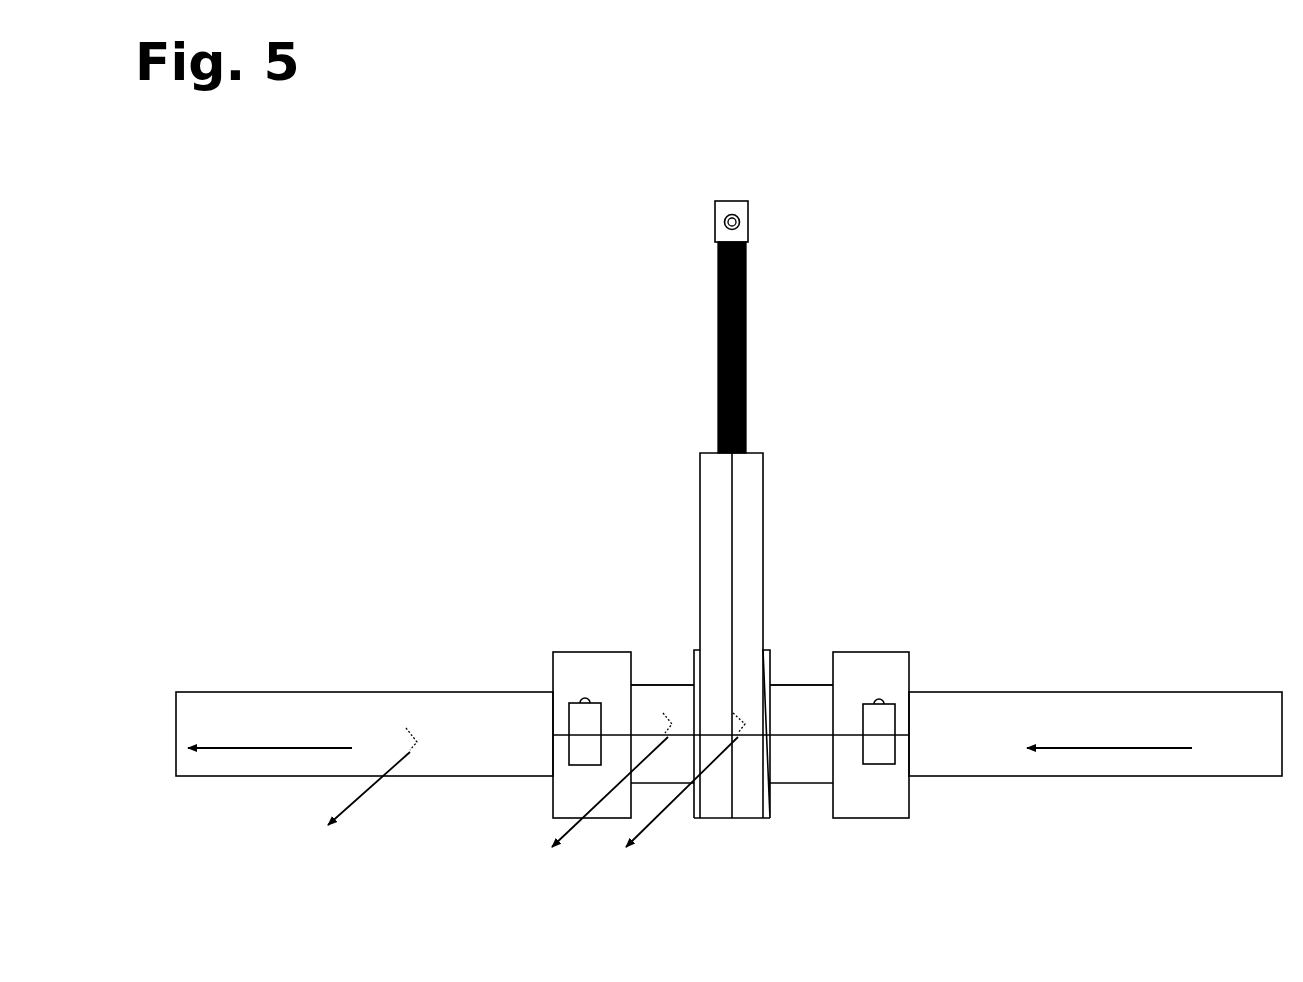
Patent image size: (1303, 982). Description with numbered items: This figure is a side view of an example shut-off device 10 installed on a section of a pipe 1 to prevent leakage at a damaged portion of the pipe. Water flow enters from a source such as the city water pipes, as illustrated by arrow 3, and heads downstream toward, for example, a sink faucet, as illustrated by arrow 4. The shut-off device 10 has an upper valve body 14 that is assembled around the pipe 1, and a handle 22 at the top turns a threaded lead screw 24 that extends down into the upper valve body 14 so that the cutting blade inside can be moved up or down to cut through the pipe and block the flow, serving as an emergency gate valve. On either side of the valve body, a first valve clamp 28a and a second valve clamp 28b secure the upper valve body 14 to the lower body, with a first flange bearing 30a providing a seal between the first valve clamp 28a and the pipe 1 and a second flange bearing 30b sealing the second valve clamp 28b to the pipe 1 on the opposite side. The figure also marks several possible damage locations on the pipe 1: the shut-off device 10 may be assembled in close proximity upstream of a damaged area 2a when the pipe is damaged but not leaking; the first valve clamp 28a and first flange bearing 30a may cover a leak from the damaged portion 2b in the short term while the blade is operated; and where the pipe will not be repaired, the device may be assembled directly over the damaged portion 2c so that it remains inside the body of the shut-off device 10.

The pipe 1 is at (250, 692).
The damaged area 2a is at (411, 752).
The damaged portion 2b is at (668, 737).
The damaged portion 2c is at (738, 737).
The arrow 3 is at (1108, 748).
The arrow 4 is at (215, 748).
The shut-off device 10 is at (550, 412).
The upper valve body 14 is at (763, 520).
The handle 22 is at (730, 215).
The threaded lead screw 24 is at (718, 318).
The first valve clamp 28a is at (553, 652).
The second valve clamp 28b is at (893, 652).
The first flange bearing 30a is at (650, 685).
The second flange bearing 30b is at (803, 685).